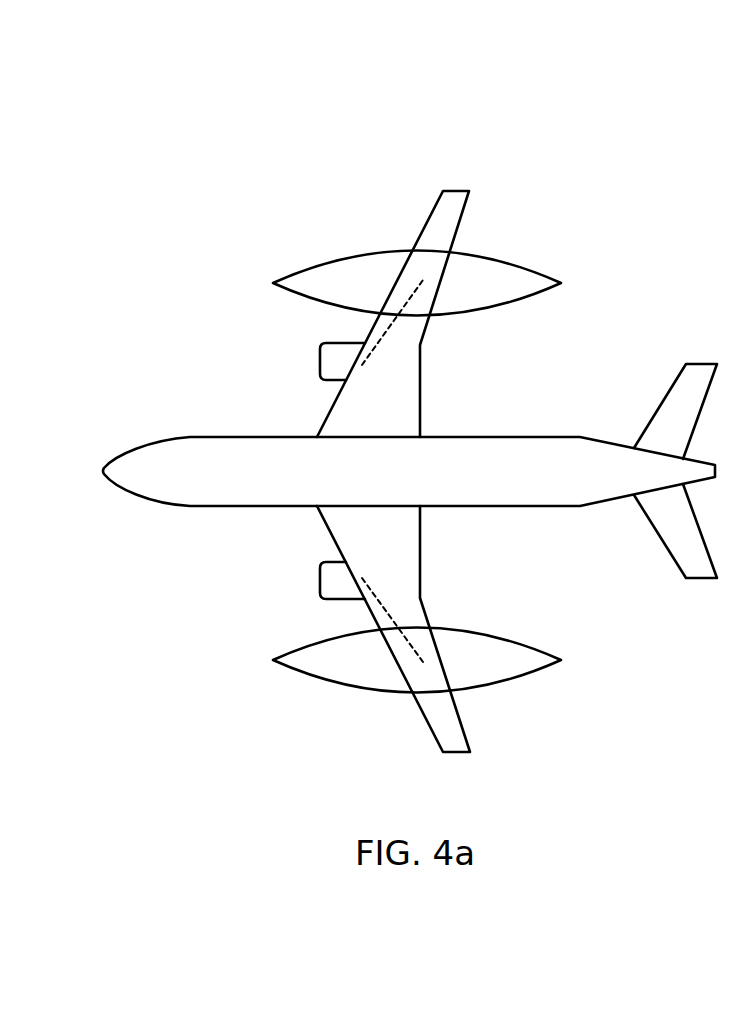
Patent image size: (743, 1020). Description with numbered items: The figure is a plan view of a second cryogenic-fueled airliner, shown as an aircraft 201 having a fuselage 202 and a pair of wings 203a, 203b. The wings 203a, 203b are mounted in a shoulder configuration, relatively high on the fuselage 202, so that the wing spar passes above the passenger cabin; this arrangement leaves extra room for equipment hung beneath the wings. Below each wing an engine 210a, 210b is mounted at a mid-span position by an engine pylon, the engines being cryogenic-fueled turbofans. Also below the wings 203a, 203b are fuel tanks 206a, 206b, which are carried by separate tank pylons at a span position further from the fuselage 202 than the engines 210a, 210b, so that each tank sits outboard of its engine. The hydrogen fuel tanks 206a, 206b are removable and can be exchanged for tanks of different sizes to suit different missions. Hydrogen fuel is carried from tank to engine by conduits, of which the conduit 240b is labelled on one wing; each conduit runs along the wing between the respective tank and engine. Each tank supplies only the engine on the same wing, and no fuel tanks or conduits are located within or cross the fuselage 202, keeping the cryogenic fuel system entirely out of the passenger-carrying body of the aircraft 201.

The aircraft 201 is at (621, 228).
The fuselage 202 is at (497, 436).
The wing 203a is at (456, 754).
The wing 203b is at (455, 190).
The fuel tank 206a is at (375, 692).
The fuel tank 206b is at (382, 250).
The engine 210a is at (319, 581).
The engine 210b is at (319, 361).
The hydrogen fuel conduit 240b is at (403, 303).